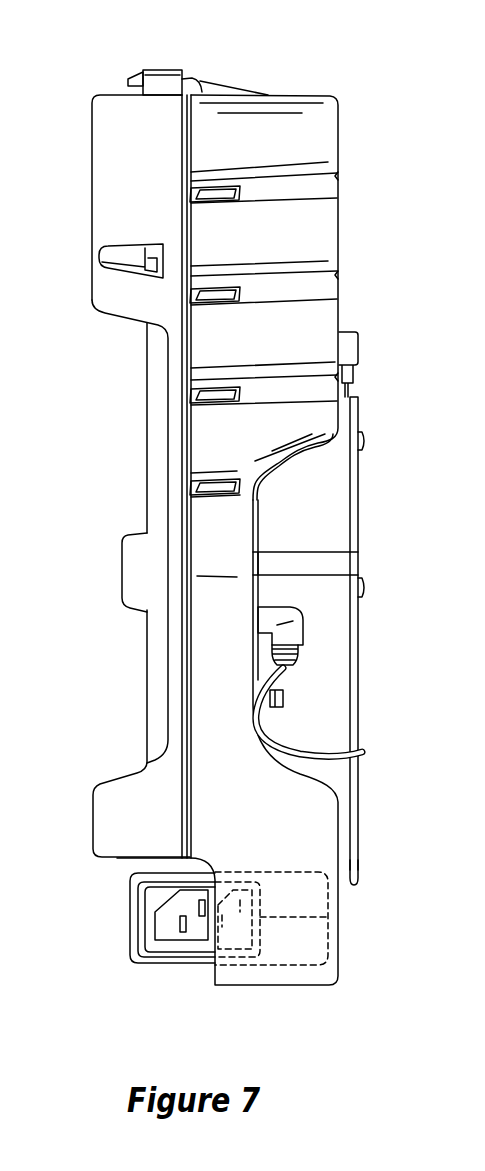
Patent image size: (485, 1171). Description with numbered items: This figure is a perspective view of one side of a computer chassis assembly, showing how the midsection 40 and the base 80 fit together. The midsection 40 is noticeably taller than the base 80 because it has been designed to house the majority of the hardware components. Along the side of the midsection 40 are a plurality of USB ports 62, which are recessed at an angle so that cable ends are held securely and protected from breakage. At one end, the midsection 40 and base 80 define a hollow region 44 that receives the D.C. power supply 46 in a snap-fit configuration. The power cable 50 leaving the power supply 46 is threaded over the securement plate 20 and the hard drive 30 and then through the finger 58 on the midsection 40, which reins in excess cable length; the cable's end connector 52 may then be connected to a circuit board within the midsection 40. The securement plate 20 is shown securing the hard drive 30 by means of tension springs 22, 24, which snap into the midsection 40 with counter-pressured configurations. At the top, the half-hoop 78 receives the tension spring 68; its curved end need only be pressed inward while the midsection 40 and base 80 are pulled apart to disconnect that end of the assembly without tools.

The securement plate 20 is at (368, 507).
The tension spring 22 is at (347, 568).
The tension spring 24 is at (353, 886).
The hard drive 30 is at (310, 501).
The midsection 40 is at (276, 80).
The hollow region 44 is at (133, 874).
The D.C. power supply 46 is at (157, 963).
The power cable 50 is at (327, 745).
The end connector 52 is at (293, 633).
The finger 58 is at (283, 698).
The USB ports 62 is at (213, 390).
The tension spring 68 is at (133, 75).
The half-hoop 78 is at (160, 80).
The base 80 is at (98, 78).